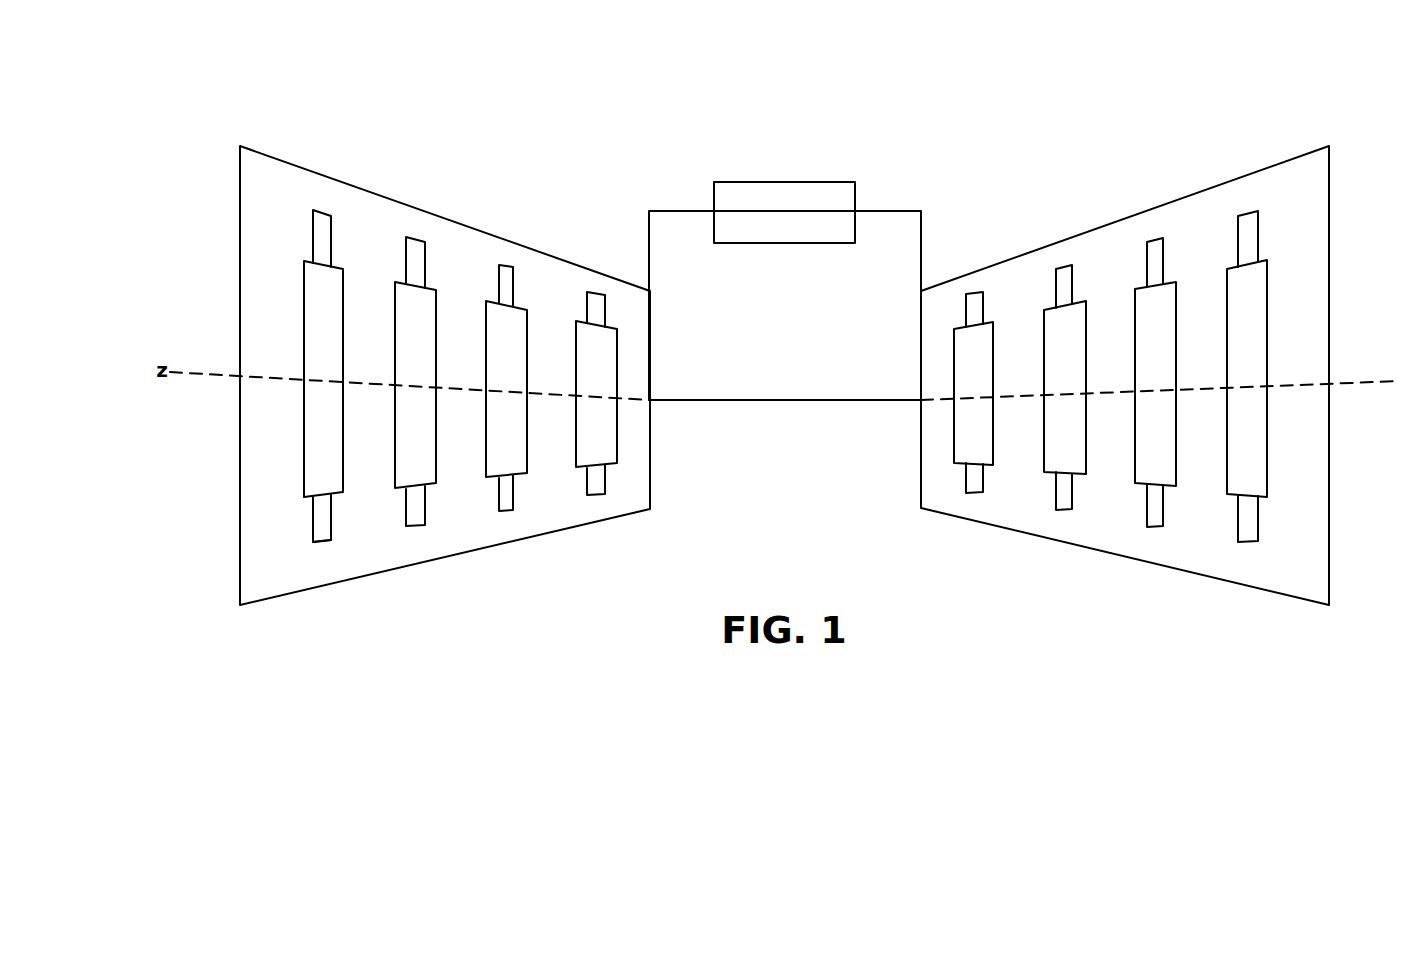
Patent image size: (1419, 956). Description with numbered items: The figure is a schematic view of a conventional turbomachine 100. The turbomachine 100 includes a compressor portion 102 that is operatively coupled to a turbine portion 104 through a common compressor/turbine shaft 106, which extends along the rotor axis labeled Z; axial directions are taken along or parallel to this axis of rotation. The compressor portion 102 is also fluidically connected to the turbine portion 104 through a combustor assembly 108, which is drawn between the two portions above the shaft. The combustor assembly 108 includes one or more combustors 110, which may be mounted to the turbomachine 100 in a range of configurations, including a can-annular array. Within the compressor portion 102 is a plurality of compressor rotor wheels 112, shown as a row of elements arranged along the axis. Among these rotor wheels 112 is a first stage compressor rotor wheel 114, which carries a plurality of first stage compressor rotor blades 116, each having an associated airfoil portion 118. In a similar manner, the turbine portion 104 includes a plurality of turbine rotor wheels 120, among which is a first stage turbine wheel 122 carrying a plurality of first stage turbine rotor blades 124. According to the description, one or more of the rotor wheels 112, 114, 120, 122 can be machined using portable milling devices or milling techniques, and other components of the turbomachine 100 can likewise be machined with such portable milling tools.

The turbomachine 100 is at (428, 136).
The compressor portion 102 is at (285, 606).
The turbine portion 104 is at (1155, 409).
The common compressor/turbine shaft 106 is at (743, 402).
The combustor assembly 108 is at (722, 154).
The combustor 110 is at (784, 180).
The compressor rotor wheels 112 is at (393, 423).
The first stage compressor rotor wheel 114 is at (318, 465).
The first stage compressor rotor blades 116 is at (296, 543).
The airfoil portion 118 is at (324, 533).
The turbine rotor wheels 120 is at (1278, 535).
The first stage turbine wheel 122 is at (991, 467).
The first stage turbine rotor blades 124 is at (978, 293).